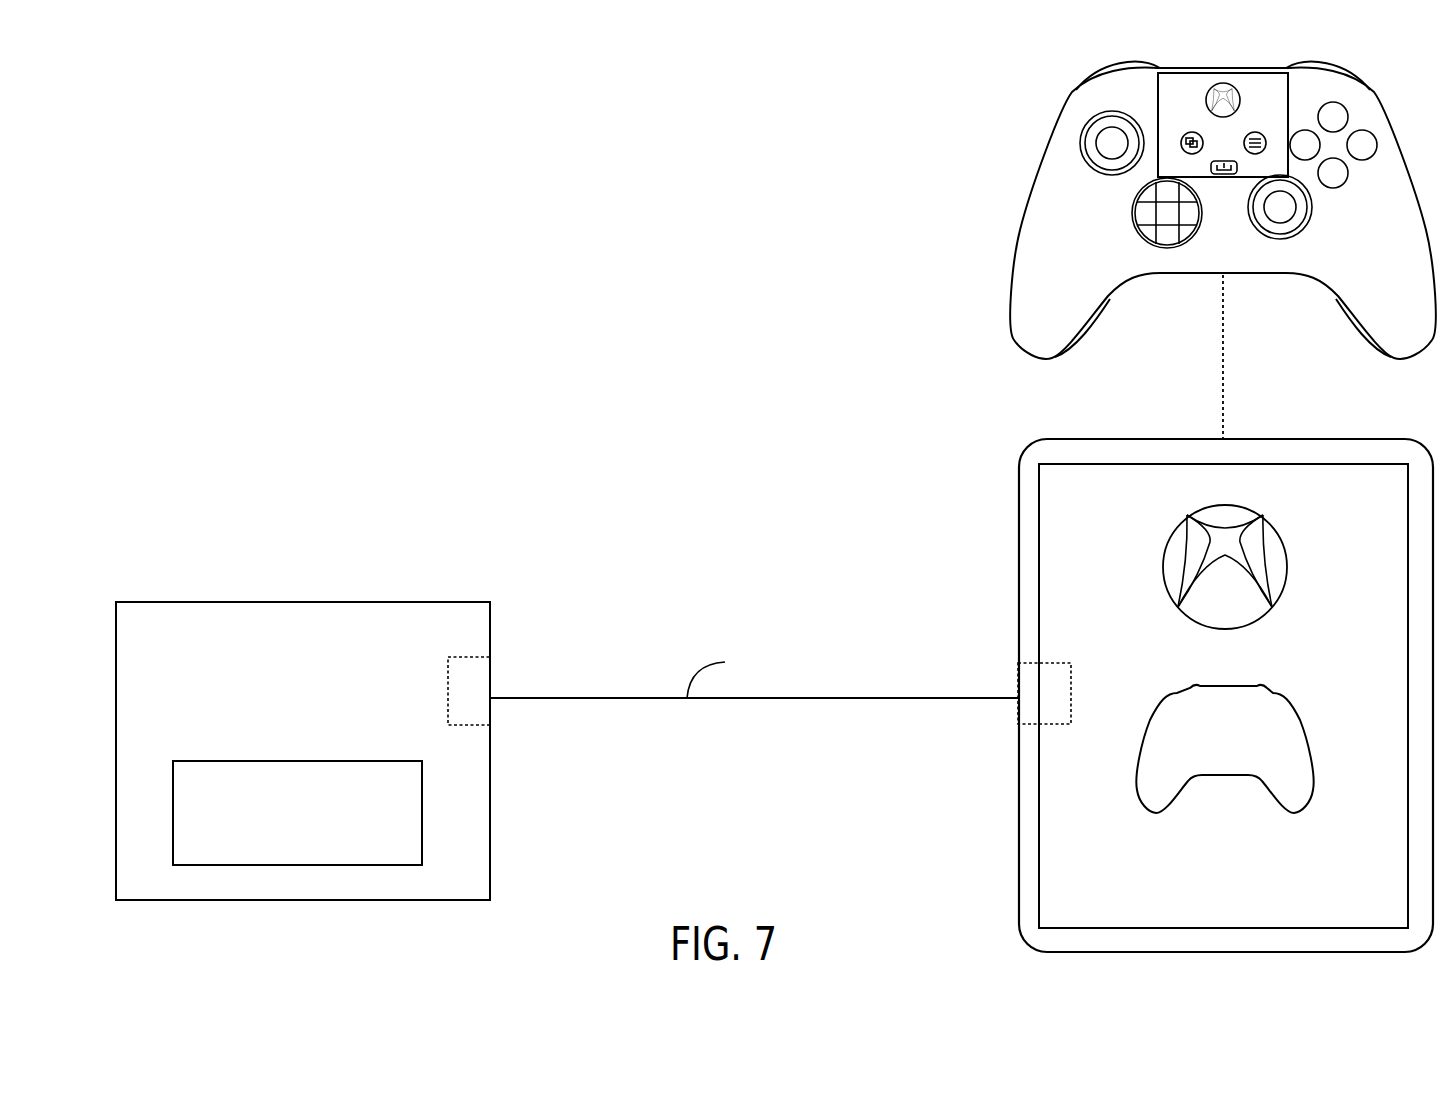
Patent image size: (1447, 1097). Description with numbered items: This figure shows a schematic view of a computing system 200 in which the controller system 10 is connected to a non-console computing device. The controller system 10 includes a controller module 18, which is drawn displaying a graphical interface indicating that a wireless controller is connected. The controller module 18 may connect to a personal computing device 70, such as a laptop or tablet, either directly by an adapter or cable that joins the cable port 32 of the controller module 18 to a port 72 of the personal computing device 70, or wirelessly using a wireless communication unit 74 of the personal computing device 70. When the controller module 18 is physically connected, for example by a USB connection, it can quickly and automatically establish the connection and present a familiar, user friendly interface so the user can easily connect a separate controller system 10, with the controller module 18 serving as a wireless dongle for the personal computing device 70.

The computing system 200 is at (450, 230).
The controller system 10 is at (1033, 112).
The controller module 18 is at (1030, 440).
The cable port 32 is at (1027, 663).
The personal computing device 70 is at (303, 751).
The port 72 is at (478, 657).
The wireless communication unit 74 is at (297, 813).